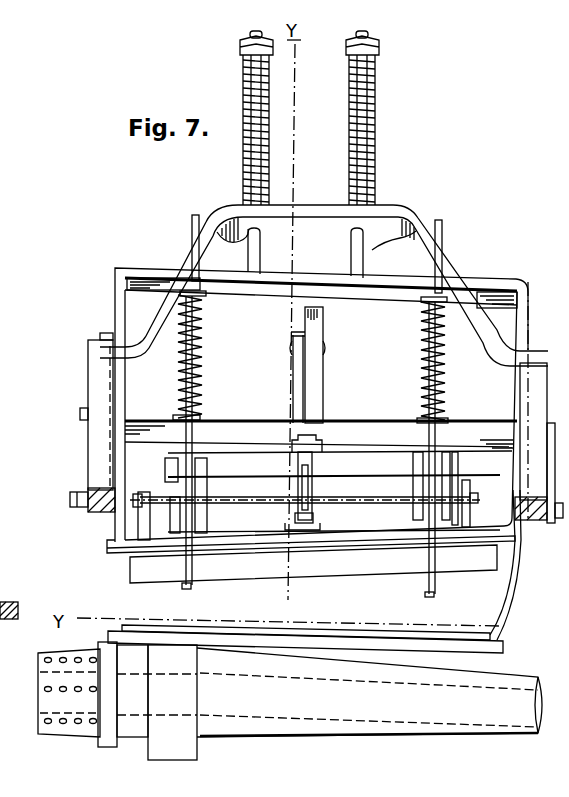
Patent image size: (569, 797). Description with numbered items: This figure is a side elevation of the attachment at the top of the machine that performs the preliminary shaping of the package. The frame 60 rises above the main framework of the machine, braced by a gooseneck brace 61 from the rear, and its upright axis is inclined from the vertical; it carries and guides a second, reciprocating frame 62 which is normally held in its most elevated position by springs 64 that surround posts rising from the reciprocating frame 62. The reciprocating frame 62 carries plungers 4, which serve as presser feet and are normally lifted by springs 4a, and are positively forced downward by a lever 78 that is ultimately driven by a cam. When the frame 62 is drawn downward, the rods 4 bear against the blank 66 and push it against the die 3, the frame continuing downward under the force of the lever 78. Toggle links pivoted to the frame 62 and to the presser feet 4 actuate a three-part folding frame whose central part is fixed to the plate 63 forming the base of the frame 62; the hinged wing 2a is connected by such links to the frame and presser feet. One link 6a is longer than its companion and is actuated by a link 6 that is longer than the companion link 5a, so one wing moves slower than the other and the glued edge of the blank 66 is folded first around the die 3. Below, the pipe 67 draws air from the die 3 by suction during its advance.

The springs 64 is at (243, 176).
The springs 4a is at (200, 354).
The plungers 4 is at (199, 413).
The lever 78 is at (296, 383).
The link 6a is at (308, 467).
The folding frame part 2a is at (300, 540).
The link 5a is at (426, 522).
The link 6 is at (440, 525).
The gooseneck brace 61 is at (88, 437).
The frame 60 is at (104, 342).
The plate 63 is at (355, 540).
The reciprocating frame 62 is at (118, 551).
The blank 66 is at (305, 632).
The die 3 is at (40, 688).
The pipe 67 is at (329, 702).